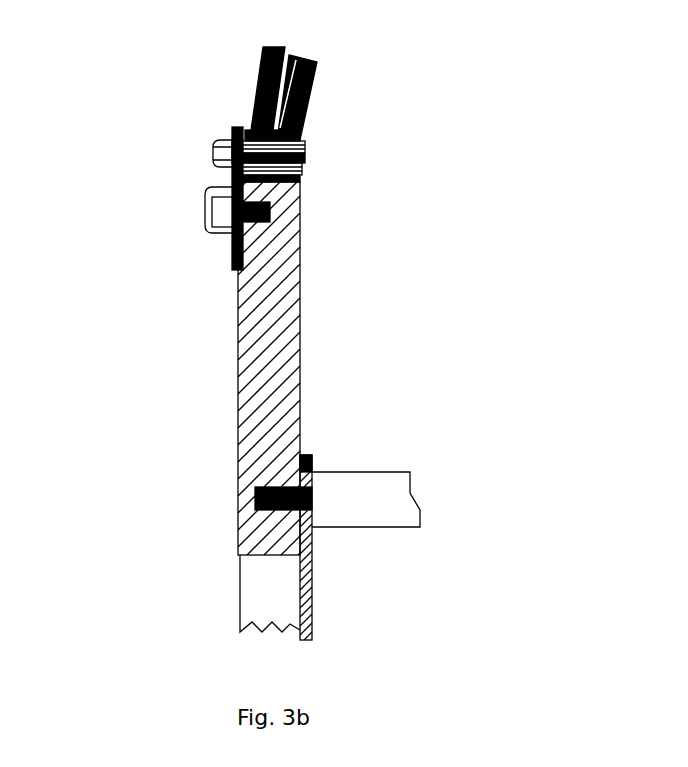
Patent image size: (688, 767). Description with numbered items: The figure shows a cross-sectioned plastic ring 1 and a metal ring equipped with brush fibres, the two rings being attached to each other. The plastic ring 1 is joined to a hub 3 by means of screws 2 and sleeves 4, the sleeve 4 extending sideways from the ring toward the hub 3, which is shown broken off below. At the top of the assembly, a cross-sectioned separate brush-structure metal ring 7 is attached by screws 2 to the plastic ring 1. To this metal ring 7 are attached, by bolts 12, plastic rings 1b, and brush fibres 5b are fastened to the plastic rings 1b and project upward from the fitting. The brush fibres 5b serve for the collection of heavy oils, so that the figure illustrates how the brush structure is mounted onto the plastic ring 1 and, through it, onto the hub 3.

The brush fibres 5b is at (263, 88).
The plastic rings 1b is at (300, 140).
The brush-structure metal ring 7 is at (300, 168).
The bolts 12 is at (215, 155).
The plastic ring 1 is at (282, 378).
The screws 2 is at (300, 222).
The sleeves 4 is at (366, 482).
The hub 3 is at (303, 610).